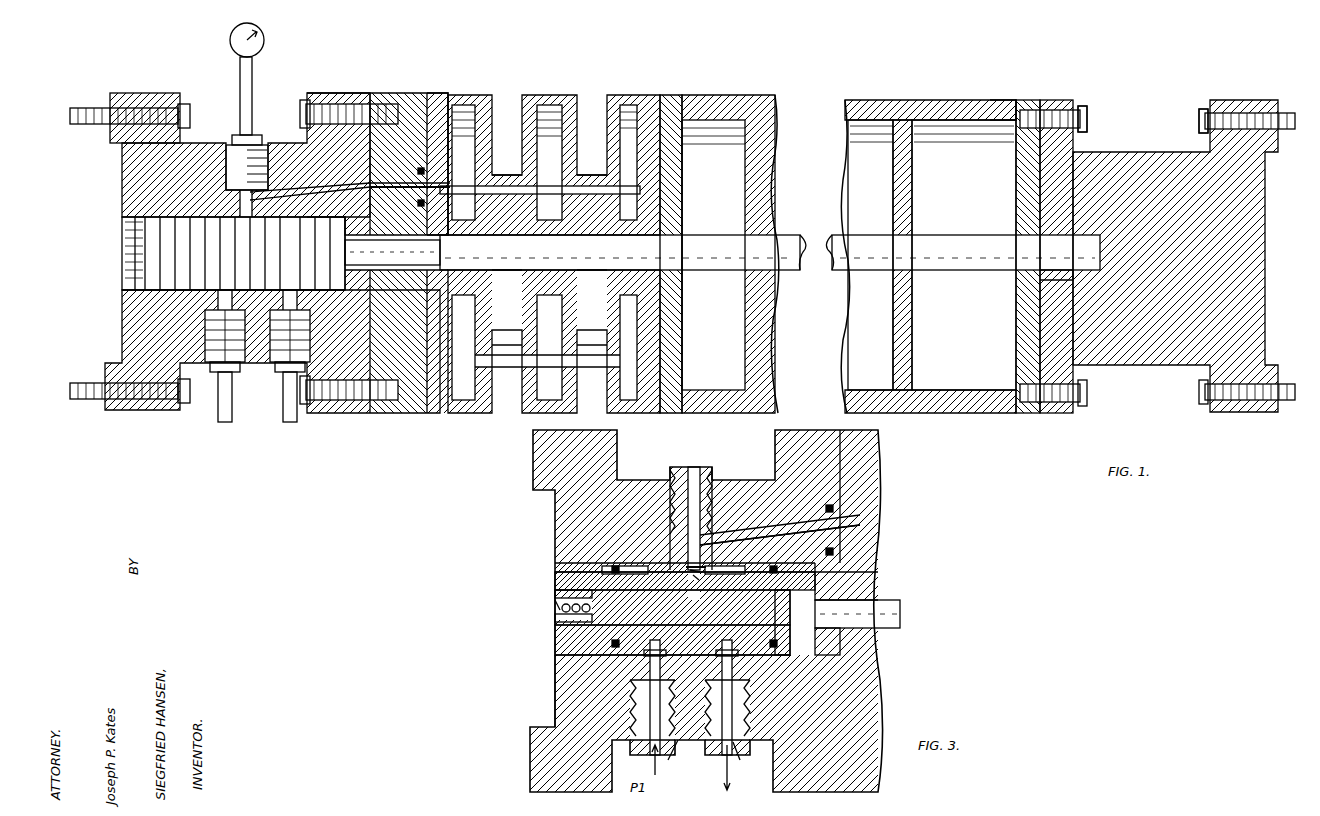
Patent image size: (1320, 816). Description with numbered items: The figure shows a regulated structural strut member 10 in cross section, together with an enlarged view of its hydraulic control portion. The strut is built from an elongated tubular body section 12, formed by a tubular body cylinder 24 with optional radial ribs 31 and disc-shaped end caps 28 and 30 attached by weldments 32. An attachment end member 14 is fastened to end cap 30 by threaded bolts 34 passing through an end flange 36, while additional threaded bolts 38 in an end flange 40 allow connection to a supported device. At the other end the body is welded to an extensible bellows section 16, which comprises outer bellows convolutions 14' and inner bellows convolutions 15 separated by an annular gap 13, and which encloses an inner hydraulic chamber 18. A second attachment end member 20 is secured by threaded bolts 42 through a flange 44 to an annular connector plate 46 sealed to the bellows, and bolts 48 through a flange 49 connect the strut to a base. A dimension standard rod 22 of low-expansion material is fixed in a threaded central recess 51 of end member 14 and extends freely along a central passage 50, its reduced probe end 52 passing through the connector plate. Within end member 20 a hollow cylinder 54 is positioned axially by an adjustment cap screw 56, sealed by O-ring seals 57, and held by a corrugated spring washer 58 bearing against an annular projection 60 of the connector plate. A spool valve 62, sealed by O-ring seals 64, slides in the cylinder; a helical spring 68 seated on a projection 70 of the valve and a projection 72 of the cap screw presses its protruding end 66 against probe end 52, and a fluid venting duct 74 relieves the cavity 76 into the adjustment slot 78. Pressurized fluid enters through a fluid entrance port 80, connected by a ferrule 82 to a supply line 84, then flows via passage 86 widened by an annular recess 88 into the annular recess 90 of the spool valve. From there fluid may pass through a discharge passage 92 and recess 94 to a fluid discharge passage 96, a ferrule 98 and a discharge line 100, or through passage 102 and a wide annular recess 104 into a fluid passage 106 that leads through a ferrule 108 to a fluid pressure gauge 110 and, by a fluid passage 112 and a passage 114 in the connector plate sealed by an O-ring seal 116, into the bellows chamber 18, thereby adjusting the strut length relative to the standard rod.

In FIG. 1, the strut member 10 is at (752, 83).
In FIG. 1, the elongated tubular body section 12 is at (880, 92).
In FIG. 1, the annular gap 13 is at (492, 186).
In FIG. 1, the attachment end member 14 is at (1175, 256).
In FIG. 1, the outer bellows convolutions 14' is at (554, 230).
In FIG. 1, the inner bellows convolutions 15 is at (550, 185).
In FIG. 1, the extensible bellows section 16 is at (555, 105).
In FIG. 1, the inner hydraulic chamber 18 is at (470, 105).
In FIG. 1, the second attachment end member 20 is at (268, 143).
In FIG. 3, the second attachment end member 20 is at (742, 484).
In FIG. 1, the dimension standard rod 22 is at (975, 270).
In FIG. 1, the tubular body cylinder 24 is at (932, 100).
In FIG. 1, the end cap 28 is at (672, 95).
In FIG. 1, the end cap 30 is at (1035, 100).
In FIG. 1, the radial ribs 31 is at (745, 347).
In FIG. 1, the weldments 32 is at (700, 95).
In FIG. 1, the threaded bolts 34 is at (1088, 118).
In FIG. 1, the end flange 36 is at (1085, 108).
In FIG. 1, the threaded bolts 38 is at (1205, 126).
In FIG. 1, the end flange 40 is at (1205, 114).
In FIG. 1, the threaded bolts 42 is at (305, 103).
In FIG. 1, the flange 44 is at (325, 104).
In FIG. 1, the annular connector plate 46 is at (438, 100).
In FIG. 3, the annular connector plate 46 is at (870, 440).
In FIG. 1, the bolts 48 is at (188, 106).
In FIG. 1, the flange 49 is at (165, 93).
In FIG. 1, the central passage 50 is at (680, 272).
In FIG. 3, the central passage 50 is at (640, 665).
In FIG. 1, the threaded central recess 51 is at (1073, 272).
In FIG. 1, the probe end 52 is at (355, 247).
In FIG. 3, the probe end 52 is at (870, 610).
In FIG. 1, the hollow cylinder 54 is at (190, 225).
In FIG. 3, the hollow cylinder 54 is at (640, 657).
In FIG. 1, the adjustment cap screw 56 is at (125, 232).
In FIG. 3, the adjustment cap screw 56 is at (555, 568).
In FIG. 3, the O-ring seals 57 is at (870, 566).
In FIG. 3, the corrugated spring washer 58 is at (878, 578).
In FIG. 1, the annular projection 60 is at (350, 280).
In FIG. 3, the spool valve 62 is at (645, 612).
In FIG. 3, the O-ring seals 64 is at (612, 644).
In FIG. 3, the protruding end 66 is at (840, 640).
In FIG. 3, the helical spring 68 is at (560, 604).
In FIG. 3, the projection 70 is at (565, 620).
In FIG. 3, the projection 72 is at (580, 614).
In FIG. 3, the fluid venting duct 74 is at (556, 604).
In FIG. 3, the cavity 76 is at (556, 592).
In FIG. 3, the adjustment slot 78 is at (570, 612).
In FIG. 3, the fluid entrance port 80 is at (615, 690).
In FIG. 3, the ferrule 82 is at (690, 755).
In FIG. 3, the fluid passage or line 84 is at (660, 750).
In FIG. 3, the passage 86 is at (630, 690).
In FIG. 3, the annular recess 88 is at (686, 568).
In FIG. 3, the annular recess 90 is at (692, 625).
In FIG. 3, the fluid discharge passage 92 is at (762, 630).
In FIG. 3, the recess 94 is at (860, 553).
In FIG. 3, the fluid discharge passage 96 is at (735, 675).
In FIG. 3, the ferrule 98 is at (740, 745).
In FIG. 3, the fluid discharge passage or line 100 is at (715, 769).
In FIG. 3, the passage 102 is at (693, 576).
In FIG. 3, the annular recess 104 is at (690, 568).
In FIG. 3, the fluid passage 106 is at (670, 472).
In FIG. 3, the ferrule 108 is at (712, 468).
In FIG. 1, the fluid pressure gauge 110 is at (266, 34).
In FIG. 1, the fluid passage 112 is at (350, 175).
In FIG. 3, the fluid passage 112 is at (790, 530).
In FIG. 1, the passage 114 is at (395, 170).
In FIG. 3, the passage 114 is at (860, 524).
In FIG. 3, the O-ring seal 116 is at (840, 508).